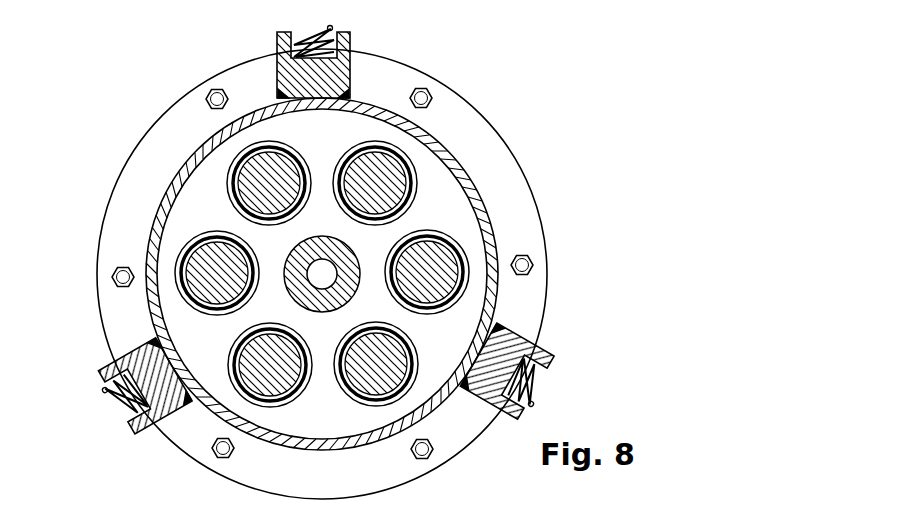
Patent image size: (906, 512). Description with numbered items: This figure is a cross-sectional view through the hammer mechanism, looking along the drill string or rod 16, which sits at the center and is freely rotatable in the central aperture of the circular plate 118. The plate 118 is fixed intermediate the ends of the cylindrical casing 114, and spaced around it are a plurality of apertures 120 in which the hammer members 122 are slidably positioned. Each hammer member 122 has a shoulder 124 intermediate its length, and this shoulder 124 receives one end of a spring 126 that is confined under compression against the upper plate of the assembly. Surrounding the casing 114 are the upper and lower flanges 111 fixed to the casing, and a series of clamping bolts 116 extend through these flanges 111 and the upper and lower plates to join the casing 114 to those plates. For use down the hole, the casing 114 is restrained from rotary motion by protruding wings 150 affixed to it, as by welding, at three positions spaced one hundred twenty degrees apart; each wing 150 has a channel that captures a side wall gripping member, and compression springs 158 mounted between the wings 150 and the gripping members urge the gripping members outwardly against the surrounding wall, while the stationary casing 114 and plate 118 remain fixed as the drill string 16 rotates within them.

The drill string or rod 16 is at (338, 252).
The upper and lower flanges 111 is at (309, 274).
The cylindrical casing 114 is at (478, 185).
The clamping bolts 116 is at (212, 94).
The circular plate 118 is at (150, 236).
The apertures 120 is at (409, 233).
The hammer members 122 is at (273, 160).
The shoulder 124 is at (241, 215).
The spring 126 is at (293, 210).
The protruding wings 150 is at (351, 47).
The compression springs 158 is at (326, 28).